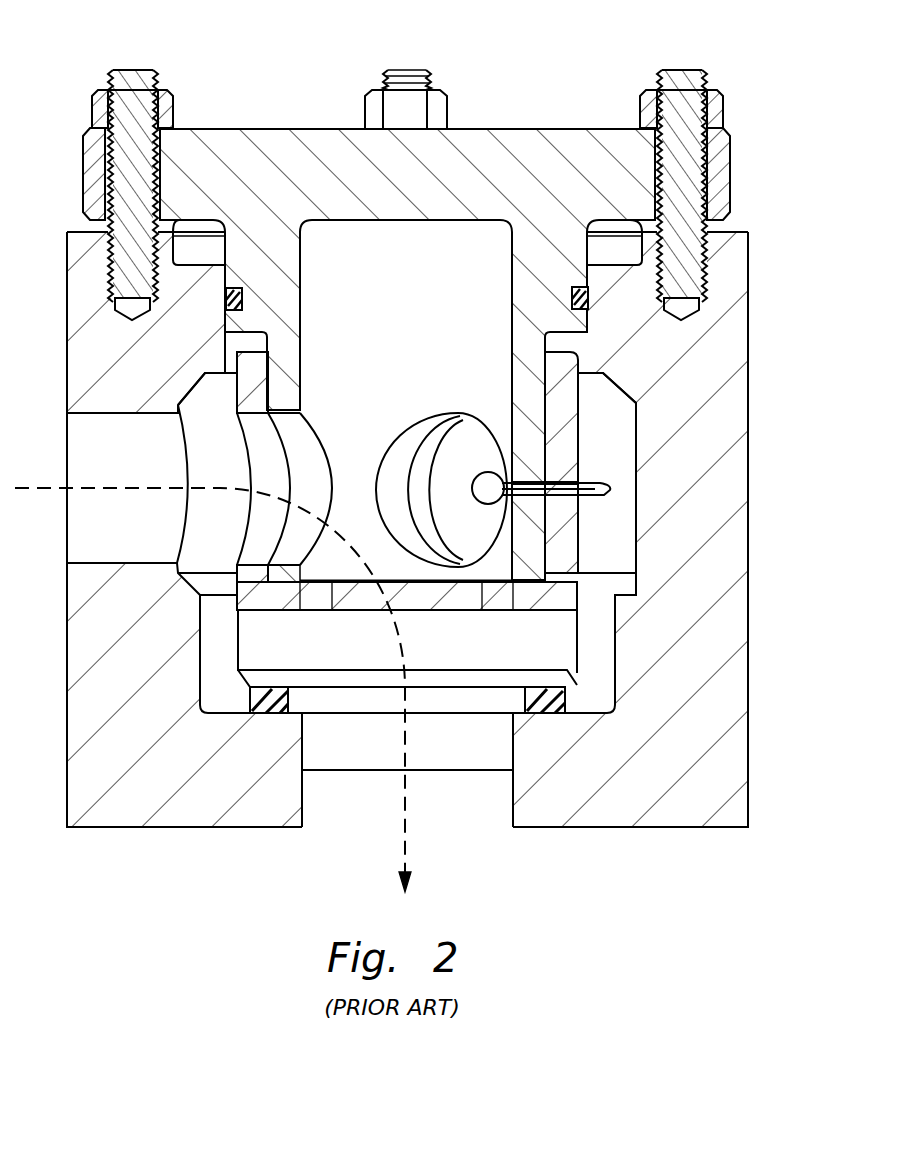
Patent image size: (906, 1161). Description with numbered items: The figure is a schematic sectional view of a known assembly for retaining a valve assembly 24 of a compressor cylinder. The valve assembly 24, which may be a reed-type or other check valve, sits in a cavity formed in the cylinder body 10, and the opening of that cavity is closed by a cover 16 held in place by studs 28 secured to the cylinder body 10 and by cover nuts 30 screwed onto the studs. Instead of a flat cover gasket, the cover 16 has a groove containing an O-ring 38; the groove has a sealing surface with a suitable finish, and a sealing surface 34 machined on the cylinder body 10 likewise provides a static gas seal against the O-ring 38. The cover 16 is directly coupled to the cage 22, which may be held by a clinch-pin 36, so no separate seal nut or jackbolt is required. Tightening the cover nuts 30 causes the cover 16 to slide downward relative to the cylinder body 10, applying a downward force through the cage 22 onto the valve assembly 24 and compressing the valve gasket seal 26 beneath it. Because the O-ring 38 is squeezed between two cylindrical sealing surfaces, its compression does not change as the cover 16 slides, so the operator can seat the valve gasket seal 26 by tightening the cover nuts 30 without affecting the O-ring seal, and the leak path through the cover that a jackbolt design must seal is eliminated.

The cylinder body 10 is at (748, 460).
The cover 16 is at (731, 160).
The cage 22 is at (570, 437).
The valve assembly 24 is at (452, 770).
The valve gasket seal 26 is at (262, 715).
The studs 28 is at (126, 70).
The cover nuts 30 is at (90, 104).
The sealing surface 34 is at (572, 295).
The clinch-pin 36 is at (472, 488).
The O-ring 38 is at (226, 295).